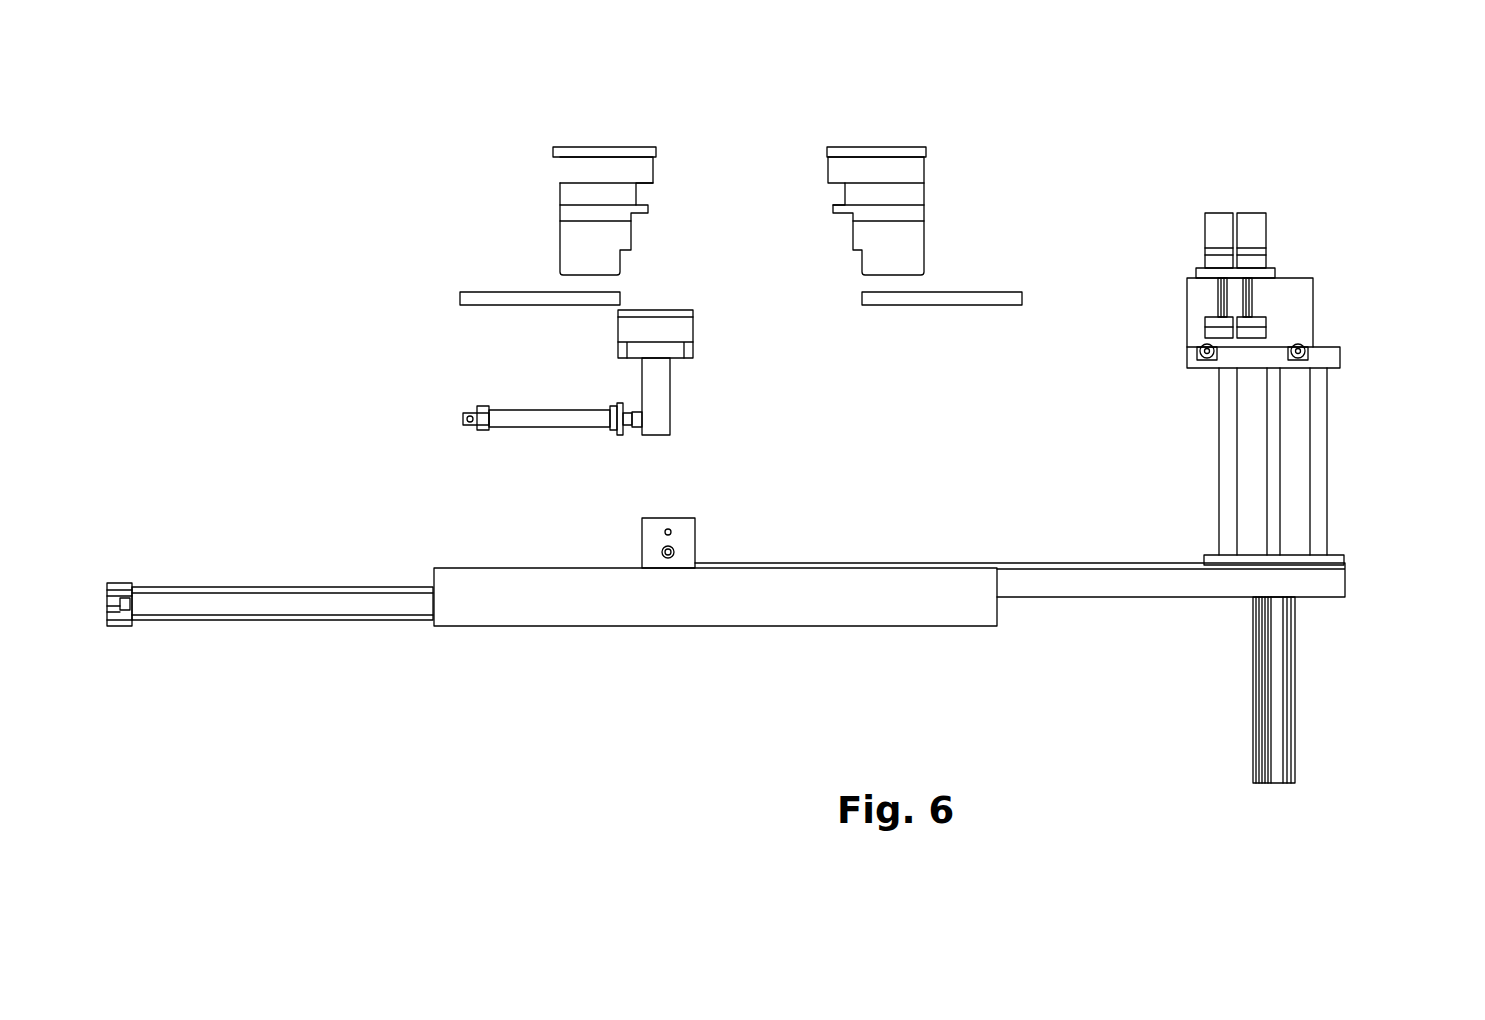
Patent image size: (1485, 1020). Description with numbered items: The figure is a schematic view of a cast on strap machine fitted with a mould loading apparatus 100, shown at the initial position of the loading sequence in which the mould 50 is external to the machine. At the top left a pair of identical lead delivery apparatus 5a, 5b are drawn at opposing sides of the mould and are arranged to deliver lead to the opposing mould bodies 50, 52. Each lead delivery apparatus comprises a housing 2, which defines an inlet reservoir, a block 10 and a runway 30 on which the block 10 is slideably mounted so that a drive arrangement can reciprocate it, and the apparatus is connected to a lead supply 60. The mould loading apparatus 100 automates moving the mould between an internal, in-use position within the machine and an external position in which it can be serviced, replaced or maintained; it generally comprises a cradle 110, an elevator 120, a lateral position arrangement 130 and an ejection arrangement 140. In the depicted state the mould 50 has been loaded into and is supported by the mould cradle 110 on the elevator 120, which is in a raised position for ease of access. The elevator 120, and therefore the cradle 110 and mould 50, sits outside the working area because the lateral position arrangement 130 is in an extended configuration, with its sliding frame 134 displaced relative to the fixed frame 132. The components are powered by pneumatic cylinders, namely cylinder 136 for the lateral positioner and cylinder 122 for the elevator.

The housing 2 is at (568, 165).
The lead delivery apparatus 5a is at (566, 134).
The lead delivery apparatus 5b is at (899, 118).
The block 10 is at (568, 196).
The runway 30 is at (570, 213).
The lead supply 60 is at (568, 255).
The mould 50 is at (1217, 225).
The mould body 52 is at (1247, 222).
The mould loading apparatus 100 is at (1352, 332).
The cradle 110 is at (1187, 328).
The elevator 120 is at (1218, 450).
The cylinder 122 is at (1295, 667).
The lateral position arrangement 130 is at (687, 652).
The fixed frame 132 is at (480, 602).
The sliding frame 134 is at (1077, 583).
The cylinder 136 is at (230, 607).
The ejection arrangement 140 is at (486, 357).